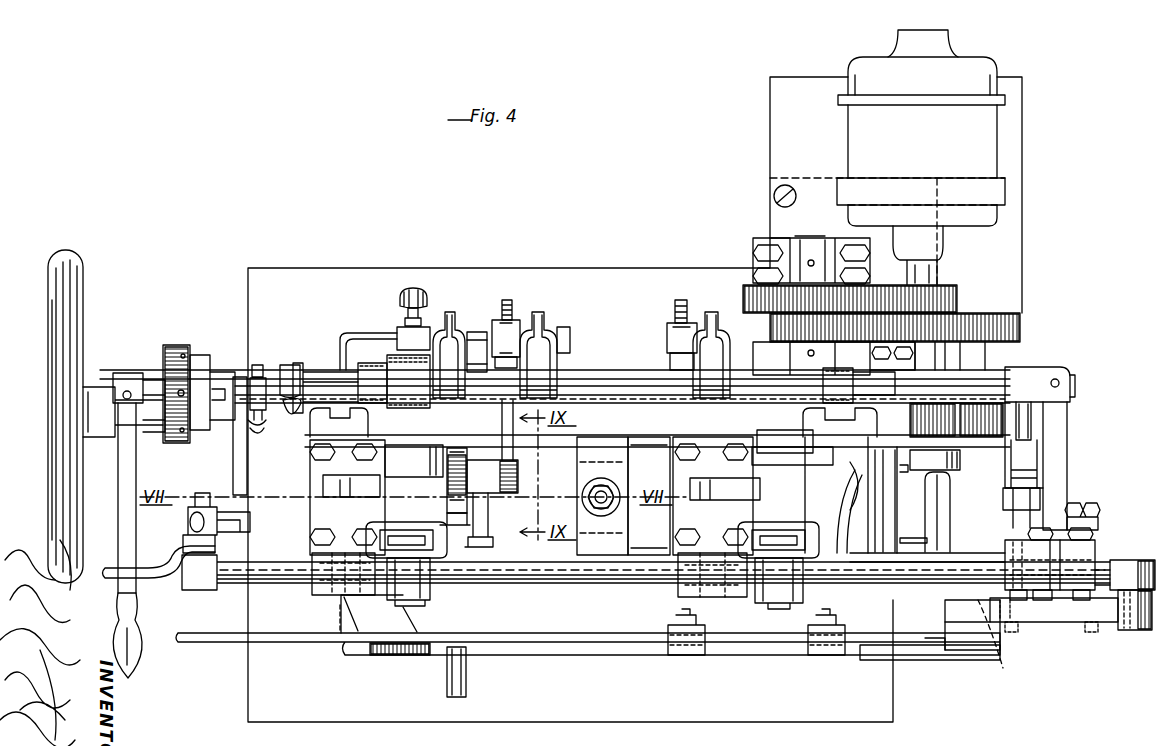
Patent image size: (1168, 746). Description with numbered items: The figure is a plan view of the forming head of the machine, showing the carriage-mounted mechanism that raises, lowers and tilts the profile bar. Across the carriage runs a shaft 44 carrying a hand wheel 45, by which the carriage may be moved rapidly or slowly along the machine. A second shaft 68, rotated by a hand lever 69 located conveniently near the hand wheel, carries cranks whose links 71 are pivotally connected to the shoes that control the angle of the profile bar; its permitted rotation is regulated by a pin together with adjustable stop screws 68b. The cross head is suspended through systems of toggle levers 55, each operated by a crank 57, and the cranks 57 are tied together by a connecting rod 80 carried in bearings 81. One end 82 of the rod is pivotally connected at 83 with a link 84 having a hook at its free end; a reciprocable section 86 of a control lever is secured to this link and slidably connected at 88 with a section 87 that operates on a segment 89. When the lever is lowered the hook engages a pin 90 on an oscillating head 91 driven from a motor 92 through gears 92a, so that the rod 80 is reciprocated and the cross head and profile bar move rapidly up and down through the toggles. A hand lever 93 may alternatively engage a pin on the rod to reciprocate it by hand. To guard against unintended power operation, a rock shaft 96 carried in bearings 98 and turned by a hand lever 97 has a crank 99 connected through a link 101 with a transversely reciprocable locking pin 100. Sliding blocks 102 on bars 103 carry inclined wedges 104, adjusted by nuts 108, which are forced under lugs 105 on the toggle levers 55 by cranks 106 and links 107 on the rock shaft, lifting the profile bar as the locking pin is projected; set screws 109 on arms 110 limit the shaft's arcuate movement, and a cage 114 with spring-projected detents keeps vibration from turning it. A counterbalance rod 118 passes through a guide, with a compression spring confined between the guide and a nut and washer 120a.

The hand wheel 45 is at (60, 340).
The shaft 68 is at (152, 390).
The shaft 44 is at (147, 425).
The adjustable stop screws 68b is at (264, 365).
The hand lever 69 is at (122, 534).
The hand lever 93 is at (148, 575).
The hand lever 97 is at (300, 372).
The bearings 98 is at (368, 363).
The set screws 109 is at (412, 288).
The arms 110 is at (425, 330).
The cage 114 is at (408, 381).
The nuts 108 is at (492, 355).
The links 107 is at (512, 312).
The cranks 106 is at (552, 330).
The rock shaft 96 is at (616, 380).
The motor 92 is at (887, 157).
The gears 92a is at (985, 316).
The crank 99 is at (1048, 383).
The link 101 is at (1020, 465).
The links 71 is at (304, 423).
The locking pin 100 is at (1018, 527).
The end of connecting rod 82 is at (1138, 560).
The bearings 81 is at (312, 580).
The lugs or wedges 104 is at (468, 452).
The transversely sliding blocks 102 is at (487, 476).
The bars 103 is at (480, 512).
The lugs 105 is at (458, 545).
The rod 118 is at (590, 500).
The nut and washer 120a is at (612, 490).
The toggle levers 55 is at (340, 500).
The crank 57 is at (405, 545).
The connecting rod 80 is at (580, 575).
The sliding connection 88 is at (694, 648).
The segment 89 is at (412, 655).
The control lever section 87 is at (505, 644).
The reciprocable section 86 is at (930, 660).
The oscillating head 91 is at (980, 635).
The pin 90 is at (1000, 652).
The link 84 is at (1055, 615).
The pivotal connection 83 is at (1130, 630).